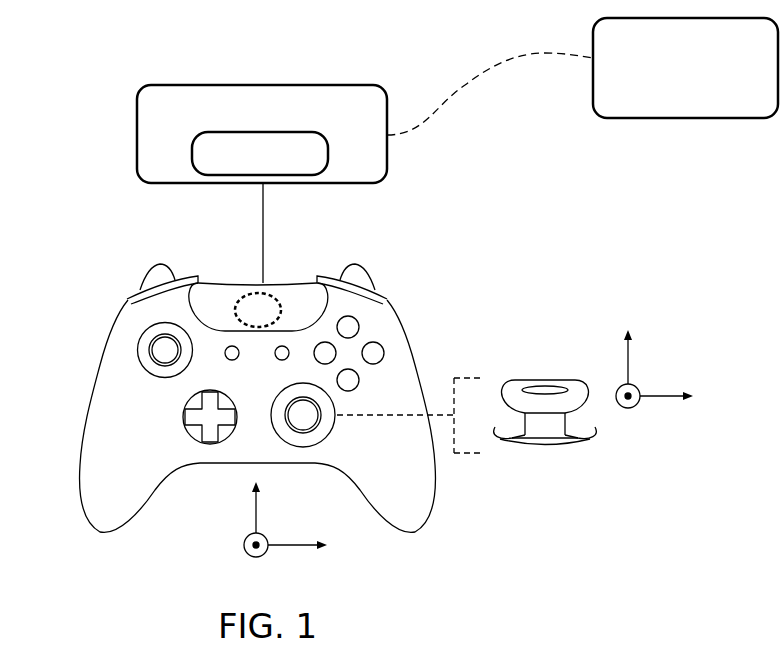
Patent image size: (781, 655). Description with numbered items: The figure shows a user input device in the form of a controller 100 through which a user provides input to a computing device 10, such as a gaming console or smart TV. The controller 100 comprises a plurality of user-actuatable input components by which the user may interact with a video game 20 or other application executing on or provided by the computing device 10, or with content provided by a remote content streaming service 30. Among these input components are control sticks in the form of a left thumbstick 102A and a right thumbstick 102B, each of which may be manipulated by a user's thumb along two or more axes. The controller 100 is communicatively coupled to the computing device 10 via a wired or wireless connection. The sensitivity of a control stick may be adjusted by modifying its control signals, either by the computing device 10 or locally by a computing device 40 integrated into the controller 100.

The computing device 10 is at (365, 168).
The video game 20 is at (260, 153).
The remote content streaming service 30 is at (685, 68).
The computing device 40 is at (258, 310).
The controller 100 is at (85, 322).
The left thumbstick 102A is at (127, 365).
The right thumbstick 102B is at (327, 437).